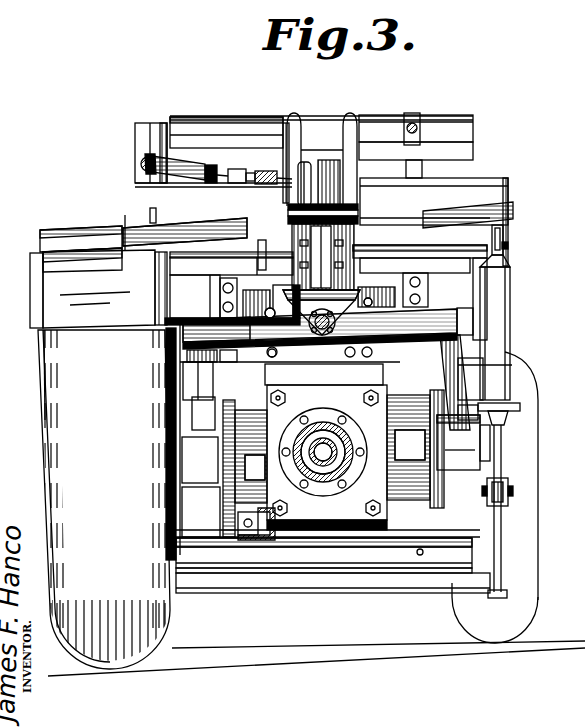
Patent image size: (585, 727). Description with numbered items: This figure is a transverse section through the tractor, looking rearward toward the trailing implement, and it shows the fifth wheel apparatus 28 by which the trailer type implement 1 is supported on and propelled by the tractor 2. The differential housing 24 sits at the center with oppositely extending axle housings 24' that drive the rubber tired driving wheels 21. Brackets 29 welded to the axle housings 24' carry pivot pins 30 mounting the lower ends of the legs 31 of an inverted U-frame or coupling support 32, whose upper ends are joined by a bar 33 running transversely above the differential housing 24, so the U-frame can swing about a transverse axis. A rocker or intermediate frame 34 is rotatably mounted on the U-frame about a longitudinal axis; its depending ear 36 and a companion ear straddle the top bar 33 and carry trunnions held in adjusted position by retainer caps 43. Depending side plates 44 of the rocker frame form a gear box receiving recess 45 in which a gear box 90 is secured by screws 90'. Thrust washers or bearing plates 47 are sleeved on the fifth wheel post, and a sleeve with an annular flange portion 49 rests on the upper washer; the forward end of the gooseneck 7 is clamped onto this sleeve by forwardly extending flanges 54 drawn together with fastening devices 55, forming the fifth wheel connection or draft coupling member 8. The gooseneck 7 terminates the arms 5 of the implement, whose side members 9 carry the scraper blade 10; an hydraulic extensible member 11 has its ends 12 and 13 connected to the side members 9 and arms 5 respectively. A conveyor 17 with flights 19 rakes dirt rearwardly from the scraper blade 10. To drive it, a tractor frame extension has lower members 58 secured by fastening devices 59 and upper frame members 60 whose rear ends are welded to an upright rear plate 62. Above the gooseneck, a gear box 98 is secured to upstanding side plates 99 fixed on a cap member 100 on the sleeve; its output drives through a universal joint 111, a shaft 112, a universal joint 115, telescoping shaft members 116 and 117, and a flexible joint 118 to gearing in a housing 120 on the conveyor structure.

The trailer type implement 1 is at (510, 356).
The tractor 2 is at (42, 337).
The arms 5 is at (508, 261).
The gooseneck 7 is at (331, 133).
The fifth wheel connection or draft coupling member 8 is at (350, 236).
The side members 9 is at (475, 545).
The scraper blade 10 is at (340, 588).
The hydraulic extensible member 11 is at (497, 320).
The end of extensible member 12 is at (512, 495).
The end of extensible member 13 is at (506, 255).
The conveyor 17 is at (421, 125).
The flights 19 is at (465, 150).
The driving wheels 21 is at (65, 455).
The differential housing 24 is at (427, 449).
The axle housings 24' is at (504, 436).
The fifth wheel apparatus 28 is at (254, 240).
The brackets 29 is at (165, 460).
The pivot pins 30 is at (165, 418).
The legs 31 is at (460, 367).
The inverted U-frame or coupling support 32 is at (460, 310).
The bar 33 is at (418, 320).
The rocker or intermediate frame 34 is at (350, 310).
The depending ear 36 is at (364, 380).
The retainer caps 43 is at (300, 360).
The depending side plates 44 is at (355, 328).
The gear box receiving recess 45 is at (345, 356).
The thrust washers or bearing plates 47 is at (320, 300).
The annular flange portion 49 is at (283, 268).
The forwardly extending flanges 54 is at (352, 256).
The fastening devices 55 is at (356, 210).
The lower members 58 is at (272, 545).
The fastening devices 59 is at (258, 545).
The upper frame members 60 is at (235, 355).
The upright rear plate 62 is at (222, 294).
The gear box 90 is at (323, 357).
The screws 90' is at (259, 298).
The gear box 98 is at (328, 160).
The upstanding side plates 99 is at (305, 160).
The cap member 100 is at (357, 220).
The universal joint 111 is at (287, 122).
The shaft 112 is at (265, 170).
The universal joint 115 is at (243, 168).
The telescoping shaft member 116 is at (219, 188).
The telescoping shaft member 117 is at (188, 165).
The flexible joint 118 is at (150, 158).
The housing 120 is at (135, 143).